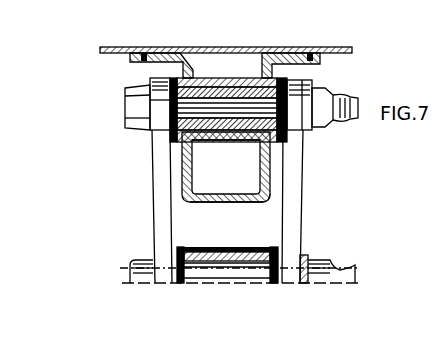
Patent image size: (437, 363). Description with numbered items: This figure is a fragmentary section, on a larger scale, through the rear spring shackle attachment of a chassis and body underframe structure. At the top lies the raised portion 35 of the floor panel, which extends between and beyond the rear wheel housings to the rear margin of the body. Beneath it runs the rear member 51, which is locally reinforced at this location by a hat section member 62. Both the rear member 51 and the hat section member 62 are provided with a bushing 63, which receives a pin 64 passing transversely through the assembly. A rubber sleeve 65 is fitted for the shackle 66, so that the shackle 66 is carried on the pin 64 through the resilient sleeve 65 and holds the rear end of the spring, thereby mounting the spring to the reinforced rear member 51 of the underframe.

The raised portion 35 is at (118, 48).
The pin 64 is at (247, 86).
The rubber sleeve 65 is at (285, 138).
The shackle 66 is at (300, 231).
The rear member 51 is at (192, 164).
The bushing 63 is at (255, 138).
The hat section member 62 is at (213, 198).